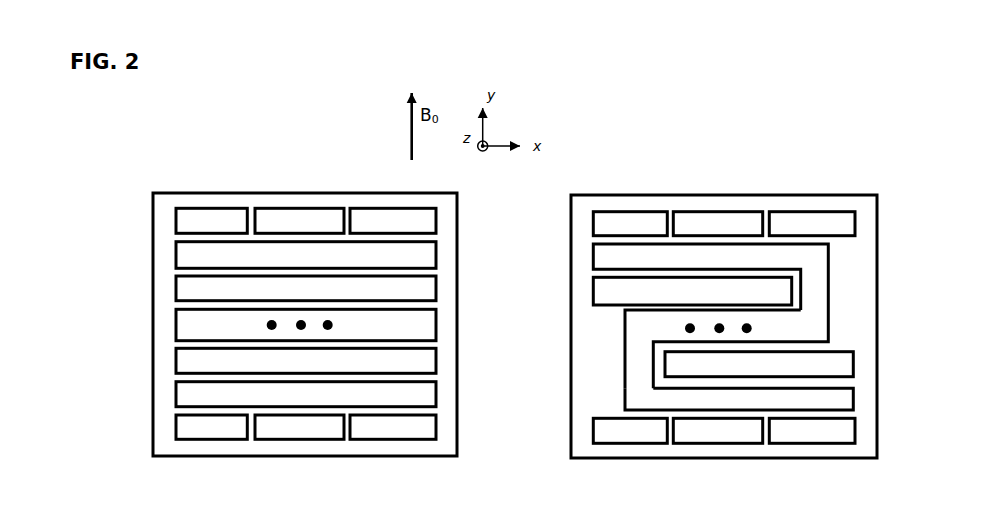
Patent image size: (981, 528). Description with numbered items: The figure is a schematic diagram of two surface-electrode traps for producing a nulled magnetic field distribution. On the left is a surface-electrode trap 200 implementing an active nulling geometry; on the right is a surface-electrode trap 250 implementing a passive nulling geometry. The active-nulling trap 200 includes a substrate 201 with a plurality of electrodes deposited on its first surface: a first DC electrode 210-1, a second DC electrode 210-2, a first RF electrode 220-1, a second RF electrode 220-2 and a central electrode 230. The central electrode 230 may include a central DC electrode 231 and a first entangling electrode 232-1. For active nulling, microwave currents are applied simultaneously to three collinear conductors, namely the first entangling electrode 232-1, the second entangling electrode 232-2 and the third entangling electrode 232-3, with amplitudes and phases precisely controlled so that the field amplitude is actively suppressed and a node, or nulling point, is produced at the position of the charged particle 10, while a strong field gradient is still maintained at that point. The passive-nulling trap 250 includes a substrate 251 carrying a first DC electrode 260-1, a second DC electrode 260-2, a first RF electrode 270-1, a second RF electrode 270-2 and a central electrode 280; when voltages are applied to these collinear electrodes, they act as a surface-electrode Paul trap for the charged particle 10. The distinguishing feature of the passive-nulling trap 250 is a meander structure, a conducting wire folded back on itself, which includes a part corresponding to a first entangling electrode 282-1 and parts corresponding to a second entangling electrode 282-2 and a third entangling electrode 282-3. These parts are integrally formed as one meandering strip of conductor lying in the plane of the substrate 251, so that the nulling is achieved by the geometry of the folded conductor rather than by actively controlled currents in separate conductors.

The charged particle 10 is at (297, 327).
The surface-electrode trap 200 is at (237, 295).
The substrate 201 is at (195, 196).
The first DC electrode 210-1 is at (175, 215).
The second DC electrode 210-2 is at (175, 420).
The first RF electrode 220-1 is at (175, 285).
The second RF electrode 220-2 is at (175, 355).
The central electrode 230 is at (227, 322).
The central DC electrode 231 is at (227, 322).
The first entangling electrode 232-1 is at (175, 325).
The second entangling electrode 232-2 is at (175, 250).
The third entangling electrode 232-3 is at (175, 387).
The surface-electrode trap 250 is at (708, 297).
The substrate 251 is at (615, 198).
The first DC electrode 260-1 is at (593, 220).
The second DC electrode 260-2 is at (593, 425).
The first RF electrode 270-1 is at (593, 287).
The second RF electrode 270-2 is at (854, 363).
The central electrode 280 is at (651, 349).
The first entangling electrode 282-1 is at (624, 328).
The second entangling electrode 282-2 is at (593, 250).
The third entangling electrode 282-3 is at (624, 392).